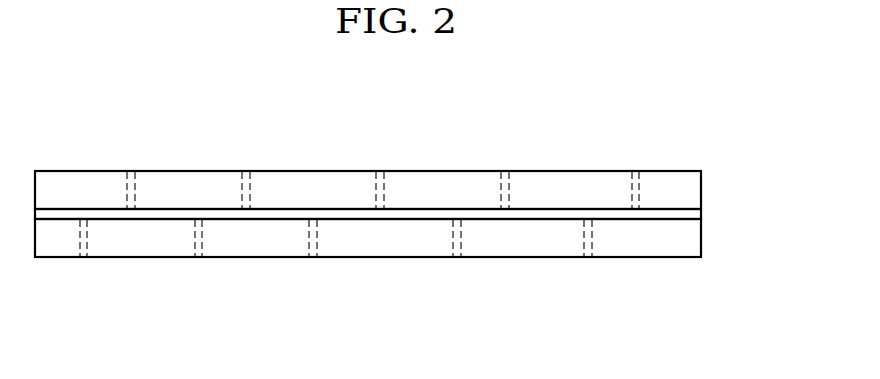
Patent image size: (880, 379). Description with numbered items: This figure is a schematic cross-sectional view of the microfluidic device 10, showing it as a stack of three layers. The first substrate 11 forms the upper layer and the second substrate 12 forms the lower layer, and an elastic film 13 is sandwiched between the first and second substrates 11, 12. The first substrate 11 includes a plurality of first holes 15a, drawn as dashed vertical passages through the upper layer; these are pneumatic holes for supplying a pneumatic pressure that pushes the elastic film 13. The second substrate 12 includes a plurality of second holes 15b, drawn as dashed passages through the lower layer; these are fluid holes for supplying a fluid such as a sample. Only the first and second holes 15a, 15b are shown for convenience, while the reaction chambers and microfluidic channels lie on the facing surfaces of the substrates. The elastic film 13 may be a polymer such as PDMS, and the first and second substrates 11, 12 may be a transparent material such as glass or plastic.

The microfluidic device 10 is at (664, 132).
The first substrate 11 is at (701, 183).
The second substrate 12 is at (701, 240).
The elastic film 13 is at (701, 212).
The first hole 15a is at (132, 170).
The second hole 15b is at (196, 258).